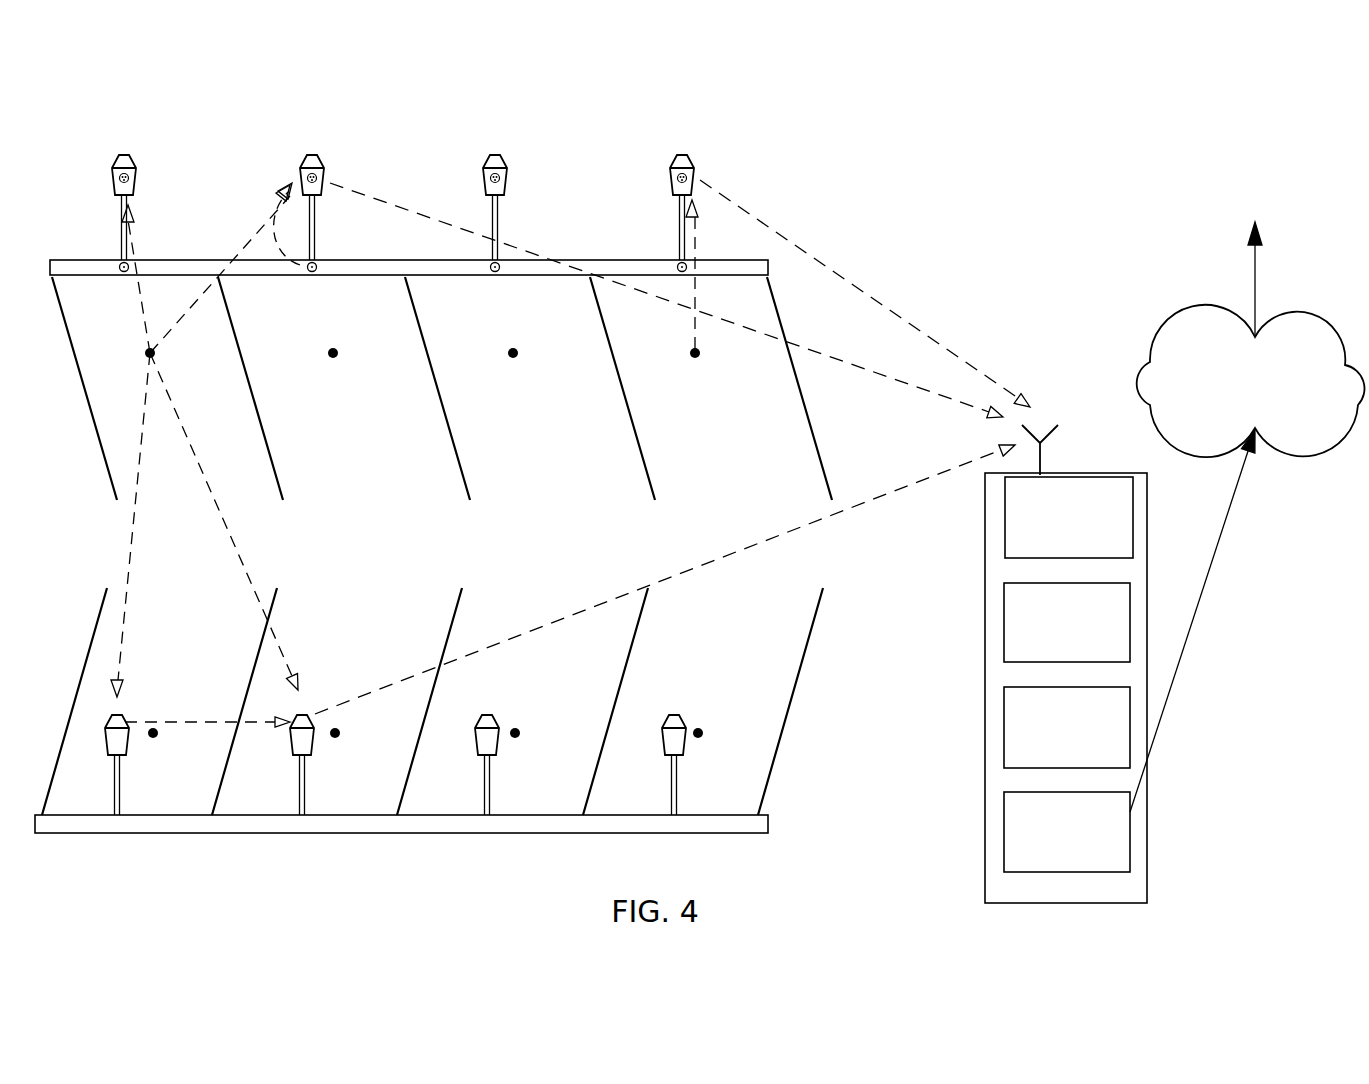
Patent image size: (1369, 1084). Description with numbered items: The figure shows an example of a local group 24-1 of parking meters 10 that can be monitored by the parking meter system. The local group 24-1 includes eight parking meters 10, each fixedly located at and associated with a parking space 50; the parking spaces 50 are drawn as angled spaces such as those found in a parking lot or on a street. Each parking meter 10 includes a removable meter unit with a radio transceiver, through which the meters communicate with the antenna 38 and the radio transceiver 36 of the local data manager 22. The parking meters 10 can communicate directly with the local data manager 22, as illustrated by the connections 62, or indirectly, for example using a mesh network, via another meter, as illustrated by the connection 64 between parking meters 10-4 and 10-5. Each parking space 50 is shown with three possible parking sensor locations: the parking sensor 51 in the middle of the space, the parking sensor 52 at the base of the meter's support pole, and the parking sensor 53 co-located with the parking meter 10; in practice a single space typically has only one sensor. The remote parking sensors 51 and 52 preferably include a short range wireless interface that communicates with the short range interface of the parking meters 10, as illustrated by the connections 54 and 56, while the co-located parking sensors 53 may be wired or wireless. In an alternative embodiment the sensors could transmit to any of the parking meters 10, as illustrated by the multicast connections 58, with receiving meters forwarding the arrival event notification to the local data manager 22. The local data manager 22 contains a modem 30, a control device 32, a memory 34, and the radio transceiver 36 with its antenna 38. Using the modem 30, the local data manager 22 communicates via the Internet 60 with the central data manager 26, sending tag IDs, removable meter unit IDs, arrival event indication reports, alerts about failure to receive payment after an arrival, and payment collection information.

The parking meter 10 is at (389, 473).
The parking meter 10-4 is at (117, 716).
The parking meter 10-5 is at (302, 750).
The parking sensor 53 is at (403, 164).
The parking sensor 52 is at (425, 267).
The parking sensor 51 is at (723, 752).
The parking space 50 is at (736, 642).
The multicast connection 58 is at (204, 441).
The connection 56 is at (278, 234).
The connection 54 is at (697, 293).
The connection 64 is at (180, 722).
The connection 62 is at (672, 447).
The antenna 38 is at (1042, 455).
The radio transceiver 36 is at (1133, 493).
The memory 34 is at (1130, 597).
The control device 32 is at (1004, 710).
The modem 30 is at (1004, 818).
The local data manager 22 is at (985, 640).
The local group 24-1 is at (1046, 206).
The Internet 60 is at (1255, 340).
The central data manager 26 is at (1255, 235).